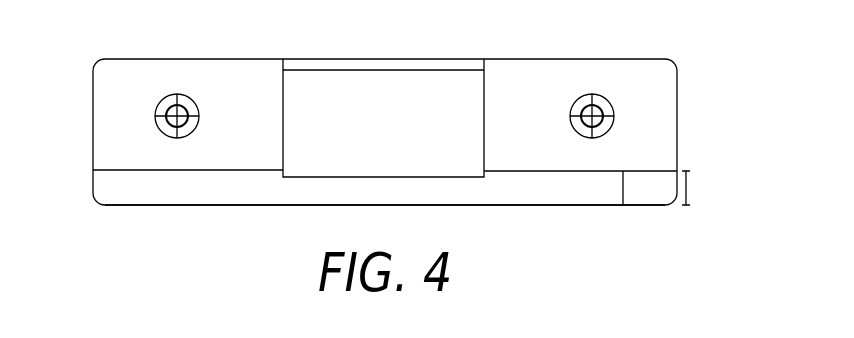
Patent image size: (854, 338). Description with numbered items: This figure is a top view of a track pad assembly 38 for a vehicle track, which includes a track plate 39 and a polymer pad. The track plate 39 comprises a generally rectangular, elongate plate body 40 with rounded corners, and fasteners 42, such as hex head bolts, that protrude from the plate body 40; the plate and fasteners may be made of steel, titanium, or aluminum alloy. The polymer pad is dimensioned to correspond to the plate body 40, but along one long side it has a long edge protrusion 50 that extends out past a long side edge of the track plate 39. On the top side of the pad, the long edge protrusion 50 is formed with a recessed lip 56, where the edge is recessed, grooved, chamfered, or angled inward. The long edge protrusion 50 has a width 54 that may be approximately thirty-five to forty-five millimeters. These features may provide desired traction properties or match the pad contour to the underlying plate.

The track pad assembly 38 is at (402, 129).
The track plate 39 is at (688, 92).
The plate body 40 is at (528, 79).
The fasteners 42 is at (176, 95).
The long edge protrusion 50 is at (92, 186).
The width 54 is at (690, 188).
The recessed lip 56 is at (178, 193).